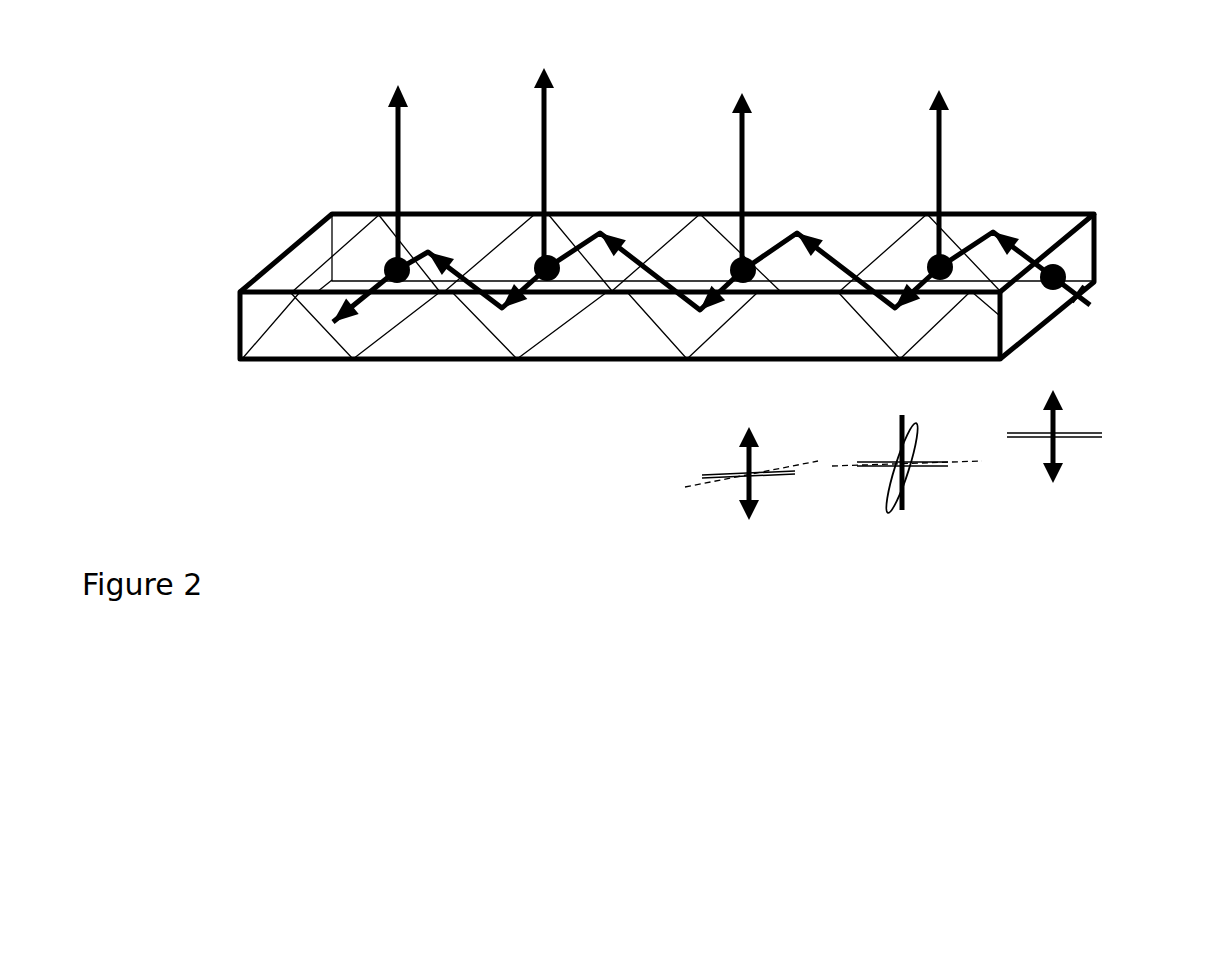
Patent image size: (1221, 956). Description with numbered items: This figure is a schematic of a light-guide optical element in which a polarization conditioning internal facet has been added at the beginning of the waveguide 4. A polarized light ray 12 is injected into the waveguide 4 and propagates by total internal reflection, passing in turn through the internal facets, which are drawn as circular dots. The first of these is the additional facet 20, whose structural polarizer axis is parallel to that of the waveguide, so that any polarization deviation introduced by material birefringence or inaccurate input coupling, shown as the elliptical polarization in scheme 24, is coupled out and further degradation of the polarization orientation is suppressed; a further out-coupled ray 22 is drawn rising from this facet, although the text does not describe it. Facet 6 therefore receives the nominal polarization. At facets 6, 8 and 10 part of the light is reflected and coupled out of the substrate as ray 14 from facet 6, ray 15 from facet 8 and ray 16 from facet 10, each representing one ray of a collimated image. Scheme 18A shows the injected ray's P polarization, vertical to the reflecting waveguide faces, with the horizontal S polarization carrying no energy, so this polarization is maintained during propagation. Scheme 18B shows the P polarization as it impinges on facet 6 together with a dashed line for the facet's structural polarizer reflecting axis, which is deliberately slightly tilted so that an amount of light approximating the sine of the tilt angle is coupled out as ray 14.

The waveguide 4 is at (1067, 212).
The facet 6 is at (756, 232).
The facet 8 is at (556, 214).
The facet 10 is at (355, 232).
The polarized light ray 12 is at (1096, 310).
The coupled-out ray 14 is at (738, 162).
The coupled-out ray 15 is at (544, 152).
The coupled-out ray 16 is at (396, 157).
The polarization scheme 18A is at (1069, 442).
The polarization scheme 18B is at (751, 502).
The additional facet 20 is at (900, 232).
The output light beam 22 is at (936, 158).
The polarization scheme 24 is at (907, 491).